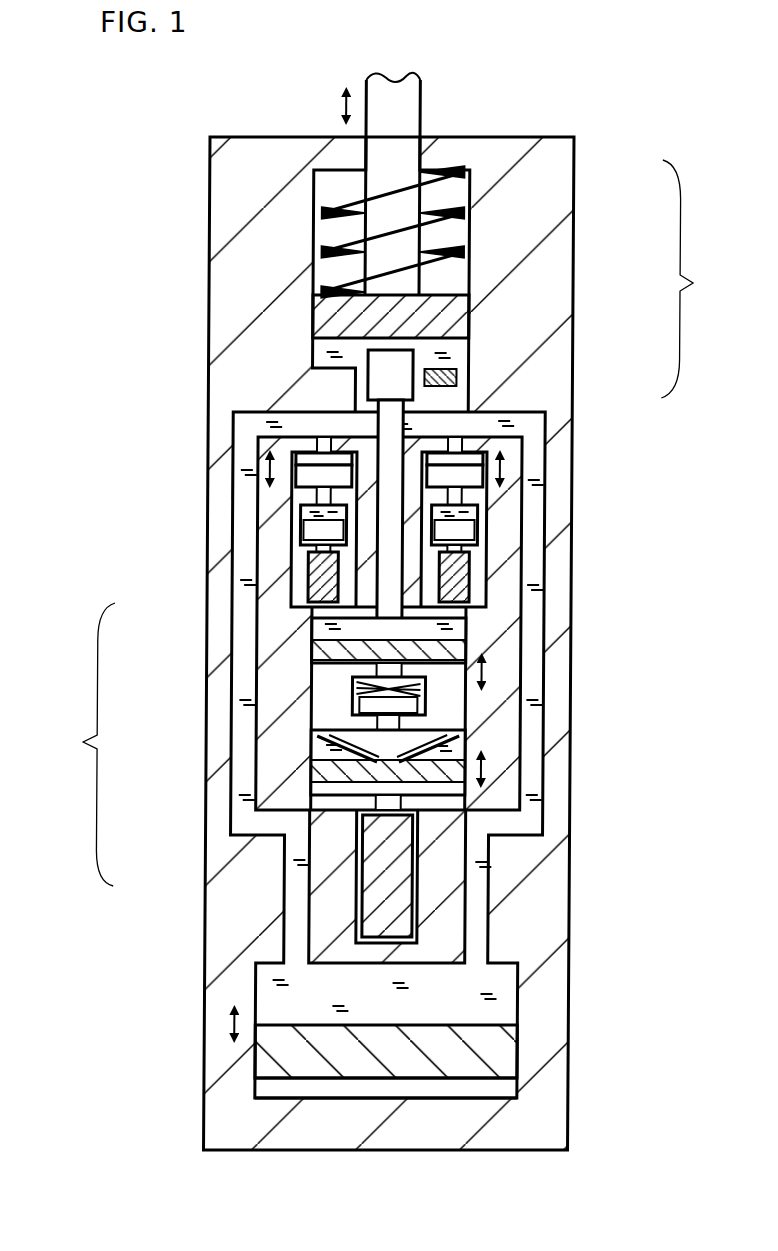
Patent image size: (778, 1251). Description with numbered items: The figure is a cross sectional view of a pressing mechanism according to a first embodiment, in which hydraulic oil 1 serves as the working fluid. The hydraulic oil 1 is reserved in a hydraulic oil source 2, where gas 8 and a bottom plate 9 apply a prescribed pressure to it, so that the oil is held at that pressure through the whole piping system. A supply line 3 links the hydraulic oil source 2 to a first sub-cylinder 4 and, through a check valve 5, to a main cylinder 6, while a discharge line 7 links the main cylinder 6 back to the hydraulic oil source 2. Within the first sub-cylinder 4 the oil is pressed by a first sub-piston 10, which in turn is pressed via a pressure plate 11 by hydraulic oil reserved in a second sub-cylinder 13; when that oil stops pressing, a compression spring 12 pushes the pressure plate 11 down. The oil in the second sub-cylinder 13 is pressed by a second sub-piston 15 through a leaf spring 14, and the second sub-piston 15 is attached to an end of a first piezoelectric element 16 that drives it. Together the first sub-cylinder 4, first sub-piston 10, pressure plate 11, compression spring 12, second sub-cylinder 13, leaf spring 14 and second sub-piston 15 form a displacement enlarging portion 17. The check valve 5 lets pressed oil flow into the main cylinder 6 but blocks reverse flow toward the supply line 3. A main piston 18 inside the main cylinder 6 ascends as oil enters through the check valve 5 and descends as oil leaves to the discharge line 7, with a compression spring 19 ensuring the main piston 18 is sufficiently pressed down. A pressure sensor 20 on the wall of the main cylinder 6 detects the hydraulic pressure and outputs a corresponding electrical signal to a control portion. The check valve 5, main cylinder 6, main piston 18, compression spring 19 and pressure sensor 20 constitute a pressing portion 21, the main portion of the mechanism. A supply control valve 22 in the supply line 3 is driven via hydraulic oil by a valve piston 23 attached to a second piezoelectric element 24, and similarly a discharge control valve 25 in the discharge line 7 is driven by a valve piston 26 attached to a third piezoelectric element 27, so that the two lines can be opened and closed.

The hydraulic oil 1 is at (481, 628).
The hydraulic oil source 2 is at (270, 985).
The supply line 3 is at (543, 468).
The first sub-cylinder 4 is at (321, 605).
The check valve 5 is at (407, 385).
The main cylinder 6 is at (462, 355).
The discharge line 7 is at (238, 462).
The gas 8 is at (489, 1090).
The bottom plate 9 is at (488, 1055).
The first sub-piston 10 is at (320, 638).
The pressure plate 11 is at (338, 720).
The compression spring 12 is at (356, 677).
The second sub-cylinder 13 is at (321, 732).
The leaf spring 14 is at (329, 763).
The second sub-piston 15 is at (327, 788).
The first piezoelectric element 16 is at (417, 907).
The displacement enlarging portion 17 is at (290, 700).
The main piston 18 is at (446, 328).
The compression spring 19 is at (446, 222).
The pressure sensor 20 is at (447, 383).
The pressing portion 21 is at (704, 279).
The supply control valve 22 is at (532, 420).
The valve piston 23 is at (480, 527).
The second piezoelectric element 24 is at (473, 583).
The discharge control valve 25 is at (324, 447).
The valve piston 26 is at (321, 528).
The third piezoelectric element 27 is at (321, 583).